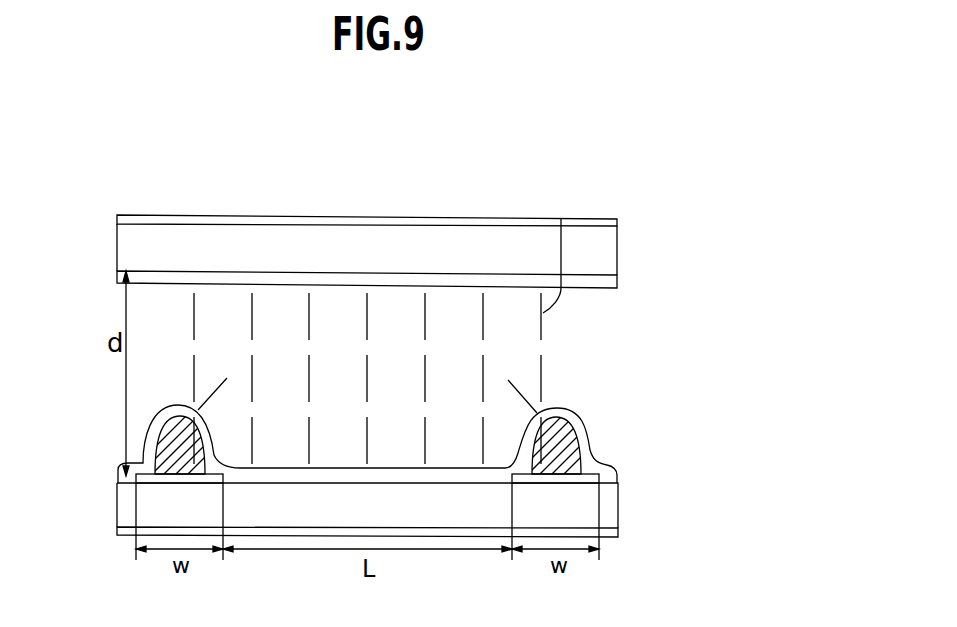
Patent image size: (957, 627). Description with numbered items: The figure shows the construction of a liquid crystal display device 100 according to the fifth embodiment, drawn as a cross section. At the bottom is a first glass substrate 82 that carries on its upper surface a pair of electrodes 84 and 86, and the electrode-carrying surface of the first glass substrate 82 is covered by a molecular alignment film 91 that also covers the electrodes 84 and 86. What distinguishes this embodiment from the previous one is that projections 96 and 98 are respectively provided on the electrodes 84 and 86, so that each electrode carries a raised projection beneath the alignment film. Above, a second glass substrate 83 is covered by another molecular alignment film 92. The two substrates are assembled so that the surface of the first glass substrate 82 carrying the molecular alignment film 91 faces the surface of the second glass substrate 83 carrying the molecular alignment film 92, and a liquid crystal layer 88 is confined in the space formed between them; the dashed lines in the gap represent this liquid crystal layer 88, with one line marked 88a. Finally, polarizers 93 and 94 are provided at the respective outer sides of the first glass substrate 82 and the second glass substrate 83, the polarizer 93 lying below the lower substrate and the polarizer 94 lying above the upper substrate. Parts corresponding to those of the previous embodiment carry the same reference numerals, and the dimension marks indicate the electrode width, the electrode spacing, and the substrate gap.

The liquid crystal display device 100 is at (80, 190).
The second glass substrate 83 is at (433, 243).
The field line end 88a is at (561, 219).
The polarizer 94 is at (618, 223).
The molecular alignment film 92 is at (620, 280).
The liquid crystal layer 88 is at (565, 347).
The electrode 84 is at (143, 467).
The electrode 86 is at (598, 463).
The molecular alignment film 91 is at (620, 477).
The first glass substrate 82 is at (427, 505).
The polarizer 93 is at (620, 532).
The projection 96 is at (178, 462).
The projection 98 is at (558, 466).